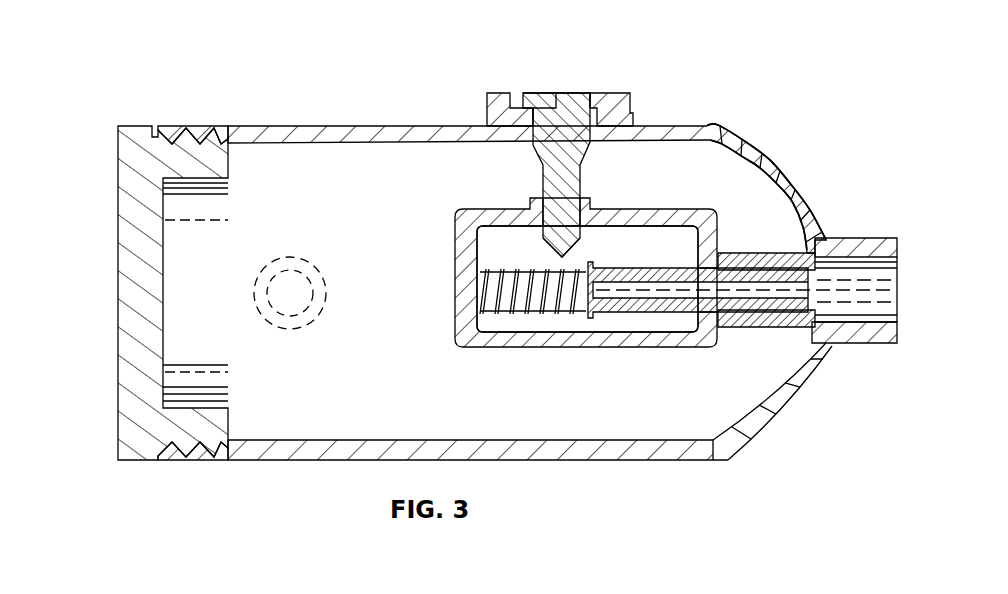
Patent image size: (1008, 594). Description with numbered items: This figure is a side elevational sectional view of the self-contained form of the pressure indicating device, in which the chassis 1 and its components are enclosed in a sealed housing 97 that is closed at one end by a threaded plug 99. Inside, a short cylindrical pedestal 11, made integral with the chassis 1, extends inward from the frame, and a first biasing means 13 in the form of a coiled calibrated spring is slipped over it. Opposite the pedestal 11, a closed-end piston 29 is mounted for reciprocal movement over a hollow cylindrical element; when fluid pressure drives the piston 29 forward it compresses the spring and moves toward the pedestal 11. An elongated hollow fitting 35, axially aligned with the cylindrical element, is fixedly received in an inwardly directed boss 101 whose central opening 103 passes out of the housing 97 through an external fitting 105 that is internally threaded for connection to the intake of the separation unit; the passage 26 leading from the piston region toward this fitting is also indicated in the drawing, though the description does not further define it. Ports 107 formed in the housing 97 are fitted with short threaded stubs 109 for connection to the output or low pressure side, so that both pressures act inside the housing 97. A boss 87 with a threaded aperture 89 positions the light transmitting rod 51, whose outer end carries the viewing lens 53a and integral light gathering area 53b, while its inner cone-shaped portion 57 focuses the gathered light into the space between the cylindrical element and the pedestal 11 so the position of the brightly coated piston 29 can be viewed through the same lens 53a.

The chassis 1 is at (466, 346).
The pedestal 11 is at (495, 266).
The first biasing means 13 is at (566, 313).
The bore in cylinder wall 26 is at (708, 293).
The piston 29 is at (637, 316).
The elongated hollow fitting 35 is at (755, 265).
The light transmitting rod 51 is at (581, 172).
The viewing lens 53a is at (557, 93).
The light gathering area 53b is at (528, 93).
The cone-shaped portion 57 is at (580, 252).
The boss 87 is at (496, 110).
The threaded bore 89 is at (632, 110).
The housing 97 is at (338, 126).
The threaded plug 99 is at (118, 174).
The inwardly directed boss 101 is at (772, 323).
The central opening 103 is at (826, 342).
The external fitting 105 is at (886, 243).
The ports 107 is at (313, 297).
The threaded stubs 109 is at (265, 268).